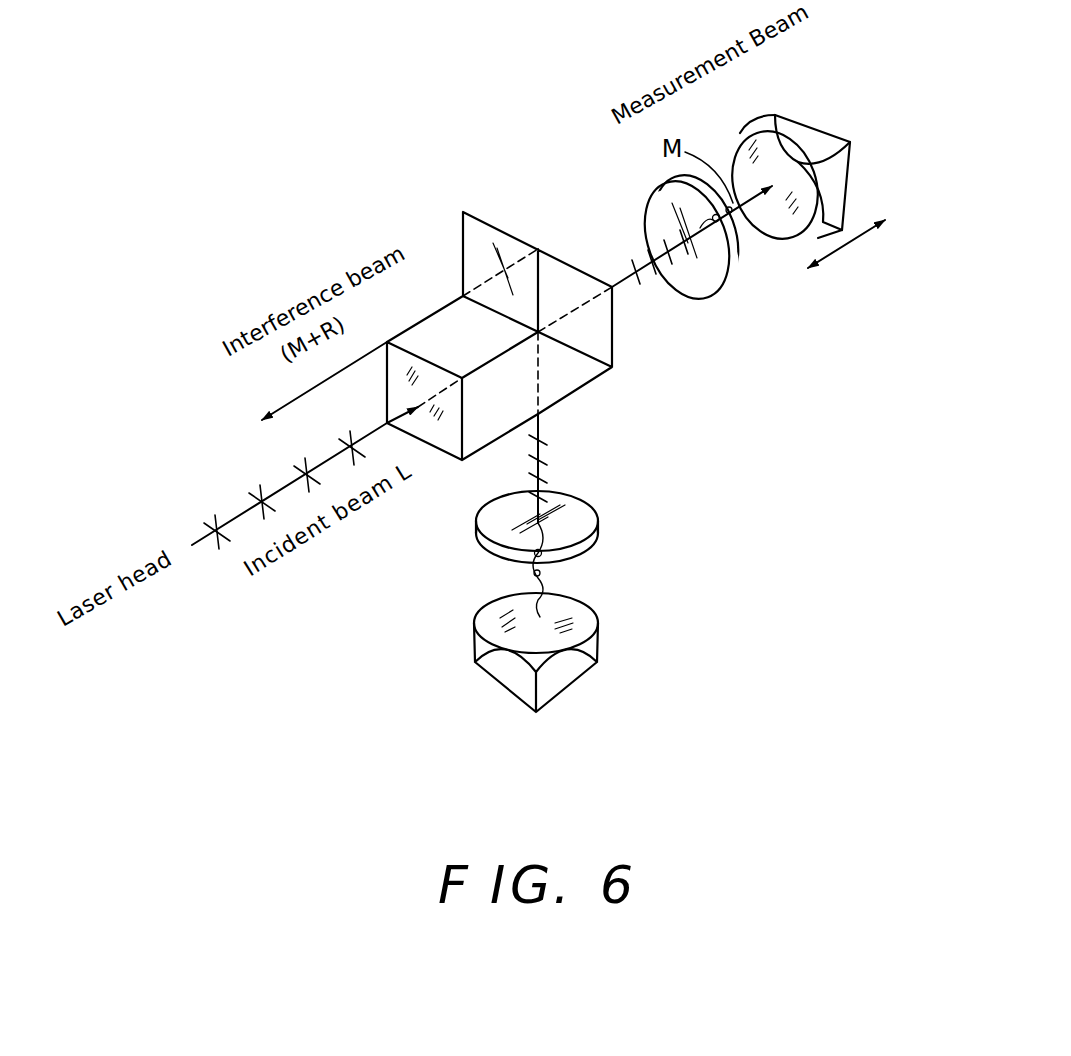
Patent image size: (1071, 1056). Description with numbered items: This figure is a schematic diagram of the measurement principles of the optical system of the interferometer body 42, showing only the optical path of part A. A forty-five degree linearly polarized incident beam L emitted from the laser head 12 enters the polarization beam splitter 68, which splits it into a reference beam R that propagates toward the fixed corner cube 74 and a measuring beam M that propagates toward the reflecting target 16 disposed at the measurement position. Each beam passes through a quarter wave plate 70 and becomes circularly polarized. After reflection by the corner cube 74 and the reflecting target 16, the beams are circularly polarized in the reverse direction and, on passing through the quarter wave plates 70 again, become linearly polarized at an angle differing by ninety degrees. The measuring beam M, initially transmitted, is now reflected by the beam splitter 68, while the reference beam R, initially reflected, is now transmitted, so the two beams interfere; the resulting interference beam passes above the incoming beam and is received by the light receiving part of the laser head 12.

The laser head 12 is at (302, 395).
The interferometer body 42 is at (528, 203).
The polarization beam splitter 68 is at (485, 234).
The 1/4 wave plate 70 is at (703, 277).
The reflecting target 16 is at (808, 140).
The fixed corner cube 74 is at (573, 620).